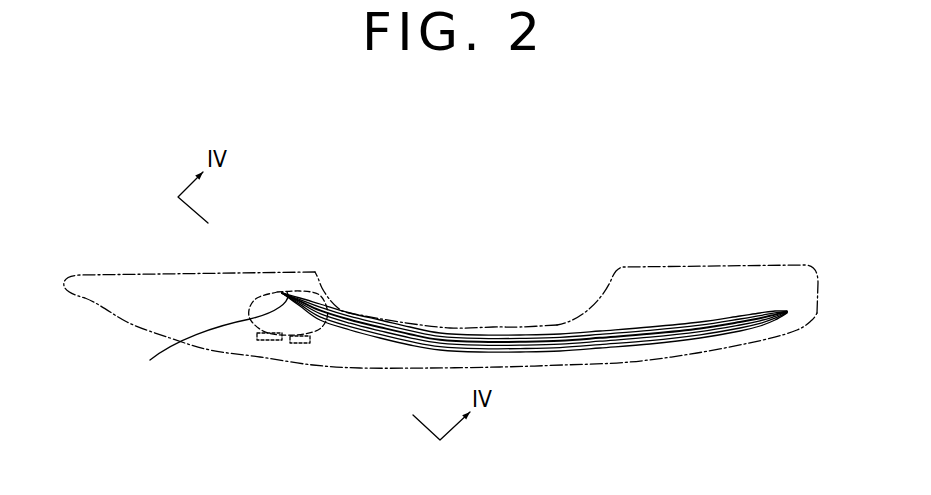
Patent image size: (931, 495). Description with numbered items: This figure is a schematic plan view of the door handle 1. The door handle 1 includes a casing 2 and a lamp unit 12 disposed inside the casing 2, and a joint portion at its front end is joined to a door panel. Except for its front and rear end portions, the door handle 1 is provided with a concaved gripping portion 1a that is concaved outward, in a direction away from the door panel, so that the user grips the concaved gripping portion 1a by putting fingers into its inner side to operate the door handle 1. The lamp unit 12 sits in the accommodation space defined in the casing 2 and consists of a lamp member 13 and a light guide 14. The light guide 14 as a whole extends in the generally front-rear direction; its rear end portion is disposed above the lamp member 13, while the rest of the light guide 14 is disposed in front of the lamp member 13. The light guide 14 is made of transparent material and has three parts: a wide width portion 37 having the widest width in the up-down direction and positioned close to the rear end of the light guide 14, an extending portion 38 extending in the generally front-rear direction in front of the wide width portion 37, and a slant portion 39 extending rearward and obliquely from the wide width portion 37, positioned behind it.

The door handle 1 is at (123, 157).
The concaved gripping portion 1a is at (493, 327).
The casing 2 is at (675, 267).
The lamp unit 12 is at (325, 180).
The lamp member 13 is at (265, 291).
The light guide 14 is at (347, 310).
The wide width portion 37 is at (353, 340).
The extending portion 38 is at (538, 345).
The slant portion 39 is at (201, 336).